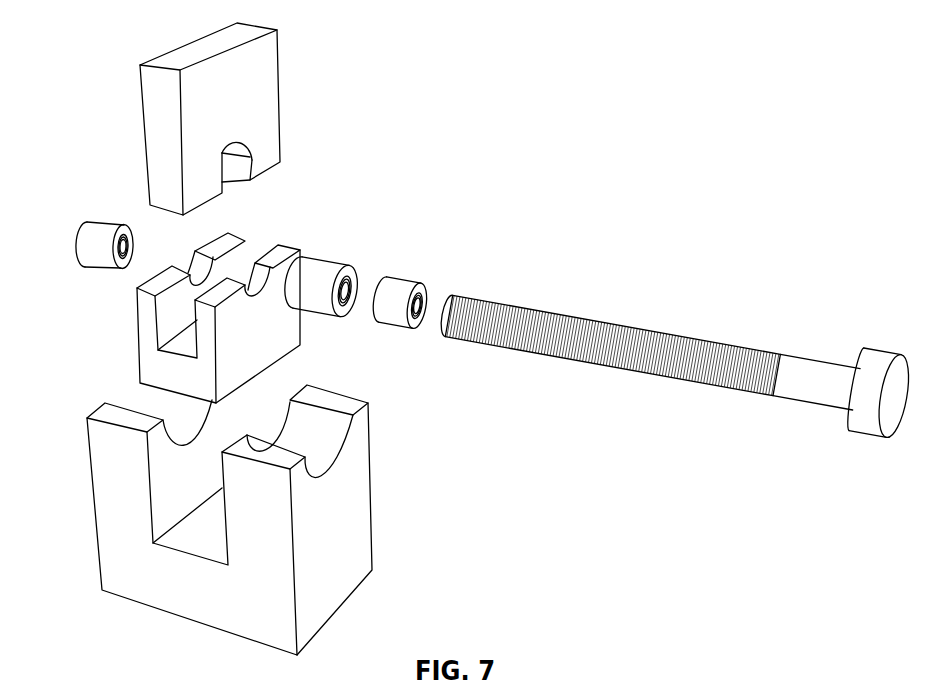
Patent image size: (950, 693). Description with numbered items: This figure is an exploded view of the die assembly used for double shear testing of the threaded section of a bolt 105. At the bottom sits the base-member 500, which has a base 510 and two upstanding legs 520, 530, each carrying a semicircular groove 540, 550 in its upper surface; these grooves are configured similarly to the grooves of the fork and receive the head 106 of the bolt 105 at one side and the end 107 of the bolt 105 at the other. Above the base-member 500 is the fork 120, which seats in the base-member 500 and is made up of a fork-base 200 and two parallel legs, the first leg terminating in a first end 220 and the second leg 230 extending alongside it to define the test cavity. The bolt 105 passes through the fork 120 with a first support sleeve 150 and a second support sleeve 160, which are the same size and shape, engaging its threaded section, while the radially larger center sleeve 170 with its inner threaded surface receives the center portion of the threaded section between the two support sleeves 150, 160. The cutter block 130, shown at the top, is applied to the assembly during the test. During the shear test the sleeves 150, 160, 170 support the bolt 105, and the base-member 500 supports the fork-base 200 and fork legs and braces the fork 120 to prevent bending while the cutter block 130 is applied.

The bolt 105 is at (680, 335).
The head 106 is at (880, 350).
The end 107 is at (478, 295).
The fork 120 is at (211, 318).
The cutter block 130 is at (160, 123).
The first support sleeve 150 is at (395, 272).
The second support sleeve 160 is at (102, 242).
The center sleeve 170 is at (318, 252).
The fork-base 200 is at (188, 341).
The first end 220 is at (275, 338).
The second leg 230 is at (148, 305).
The base-member 500 is at (246, 530).
The base 510 is at (177, 597).
The upstanding leg 520 is at (343, 520).
The upstanding leg 530 is at (119, 480).
The groove 540 is at (330, 452).
The groove 550 is at (147, 440).